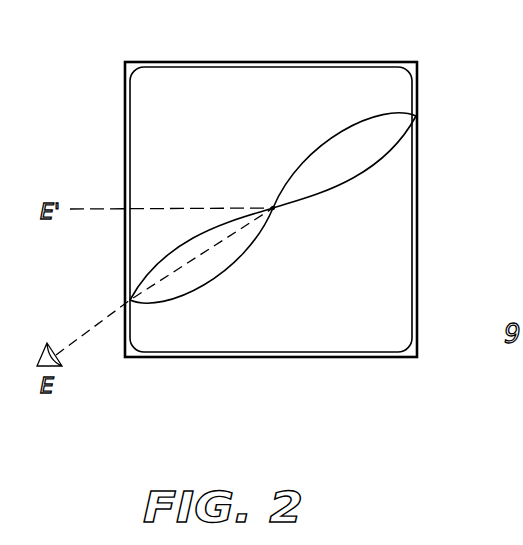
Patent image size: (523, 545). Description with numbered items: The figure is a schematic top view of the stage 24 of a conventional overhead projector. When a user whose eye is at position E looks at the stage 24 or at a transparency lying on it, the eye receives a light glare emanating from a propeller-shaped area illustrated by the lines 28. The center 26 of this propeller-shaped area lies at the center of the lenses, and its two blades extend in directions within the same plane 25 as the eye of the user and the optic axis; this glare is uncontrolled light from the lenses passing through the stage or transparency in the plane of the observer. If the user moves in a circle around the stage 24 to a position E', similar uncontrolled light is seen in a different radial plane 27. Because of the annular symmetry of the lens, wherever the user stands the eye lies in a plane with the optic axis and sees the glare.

The stage 24 is at (418, 236).
The plane 25 is at (182, 270).
The crossover point 26 is at (272, 212).
The radial plane 27 is at (95, 213).
The lines 28 is at (348, 183).